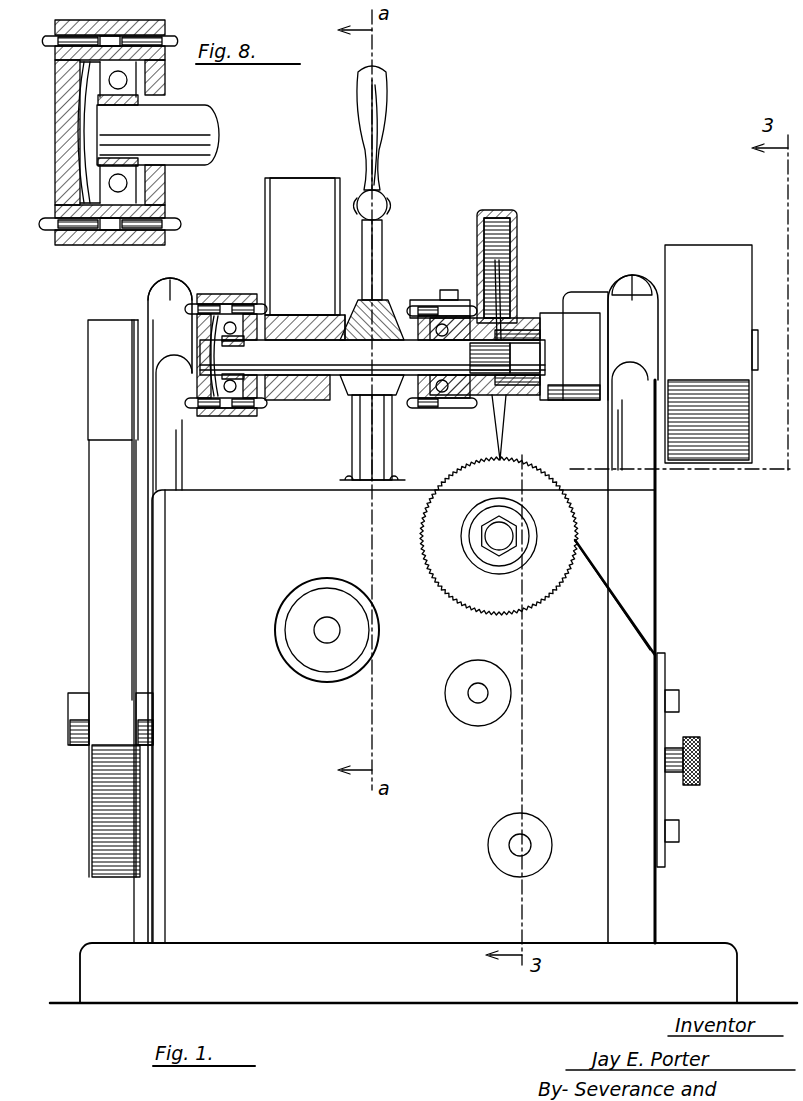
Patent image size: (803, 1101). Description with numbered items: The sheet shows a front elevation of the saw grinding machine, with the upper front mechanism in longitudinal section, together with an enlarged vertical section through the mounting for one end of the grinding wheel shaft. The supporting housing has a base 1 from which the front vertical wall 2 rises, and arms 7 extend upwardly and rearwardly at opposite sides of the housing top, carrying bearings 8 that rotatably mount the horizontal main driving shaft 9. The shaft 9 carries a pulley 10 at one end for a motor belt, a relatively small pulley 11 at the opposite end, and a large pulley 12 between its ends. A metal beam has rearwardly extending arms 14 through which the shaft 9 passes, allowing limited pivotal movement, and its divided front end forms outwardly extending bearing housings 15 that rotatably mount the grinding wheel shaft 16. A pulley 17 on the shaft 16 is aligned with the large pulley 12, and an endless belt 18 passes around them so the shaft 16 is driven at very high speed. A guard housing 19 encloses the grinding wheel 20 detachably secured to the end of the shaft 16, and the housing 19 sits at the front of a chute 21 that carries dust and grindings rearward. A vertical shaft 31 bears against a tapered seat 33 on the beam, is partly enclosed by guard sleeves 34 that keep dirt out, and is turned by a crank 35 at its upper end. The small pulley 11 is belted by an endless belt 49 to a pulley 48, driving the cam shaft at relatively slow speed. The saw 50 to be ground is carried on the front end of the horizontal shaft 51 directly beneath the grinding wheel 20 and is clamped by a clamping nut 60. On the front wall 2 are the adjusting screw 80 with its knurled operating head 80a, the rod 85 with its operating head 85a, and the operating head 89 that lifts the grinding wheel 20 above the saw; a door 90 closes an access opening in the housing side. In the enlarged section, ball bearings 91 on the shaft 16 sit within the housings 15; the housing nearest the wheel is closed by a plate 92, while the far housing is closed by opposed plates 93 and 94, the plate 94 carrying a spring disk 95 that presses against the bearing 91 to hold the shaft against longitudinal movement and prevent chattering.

In FIG. 1, the base 1 is at (392, 1000).
In FIG. 1, the front vertical wall 2 is at (180, 862).
In FIG. 1, the arms 7 is at (160, 455).
In FIG. 1, the bearings 8 is at (158, 304).
In FIG. 1, the horizontal shaft 9 is at (758, 350).
In FIG. 1, the pulley 10 is at (738, 302).
In FIG. 1, the small pulley 11 is at (88, 340).
In FIG. 1, the large pulley 12 is at (266, 200).
In FIG. 1, the rearwardly extending arms 14 is at (578, 298).
In FIG. 8, the bearing housings 15 is at (105, 240).
In FIG. 1, the bearing housings 15 is at (220, 304).
In FIG. 8, the shaft 16 is at (188, 168).
In FIG. 1, the shaft 16 is at (366, 345).
In FIG. 1, the pulley 17 is at (302, 402).
In FIG. 1, the endless belt 18 is at (282, 260).
In FIG. 1, the guard housing 19 is at (516, 248).
In FIG. 1, the grinding wheel 20 is at (503, 278).
In FIG. 1, the chute 21 is at (548, 343).
In FIG. 1, the vertical shaft 31 is at (380, 258).
In FIG. 1, the tapered seat 33 is at (340, 300).
In FIG. 1, the guard sleeves 34 is at (375, 290).
In FIG. 1, the crank 35 is at (386, 196).
In FIG. 1, the pulley 48 is at (89, 640).
In FIG. 1, the endless belt 49 is at (98, 450).
In FIG. 1, the saw 50 is at (450, 585).
In FIG. 1, the horizontal shaft 51 is at (506, 543).
In FIG. 1, the clamping nut 60 is at (530, 545).
In FIG. 1, the adjusting screw 80 is at (514, 860).
In FIG. 1, the knurled operating head 80a is at (540, 862).
In FIG. 1, the rod 85 is at (488, 688).
In FIG. 1, the operating head 85a is at (476, 726).
In FIG. 1, the operating head 89 is at (320, 660).
In FIG. 1, the door 90 is at (665, 740).
In FIG. 8, the ball bearings 91 is at (125, 95).
In FIG. 1, the ball bearings 91 is at (232, 412).
In FIG. 1, the plate 92 is at (428, 335).
In FIG. 8, the plate 93 is at (160, 80).
In FIG. 1, the plate 93 is at (244, 342).
In FIG. 8, the plate 94 is at (62, 150).
In FIG. 1, the plate 94 is at (200, 328).
In FIG. 8, the spring disk 95 is at (82, 98).
In FIG. 1, the spring disk 95 is at (212, 340).